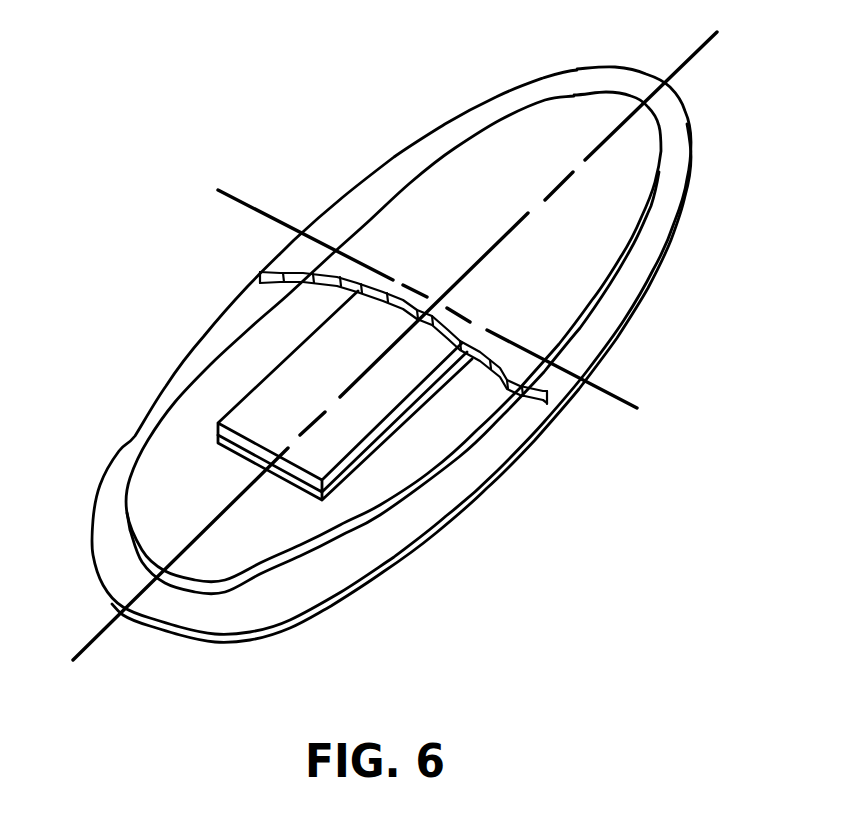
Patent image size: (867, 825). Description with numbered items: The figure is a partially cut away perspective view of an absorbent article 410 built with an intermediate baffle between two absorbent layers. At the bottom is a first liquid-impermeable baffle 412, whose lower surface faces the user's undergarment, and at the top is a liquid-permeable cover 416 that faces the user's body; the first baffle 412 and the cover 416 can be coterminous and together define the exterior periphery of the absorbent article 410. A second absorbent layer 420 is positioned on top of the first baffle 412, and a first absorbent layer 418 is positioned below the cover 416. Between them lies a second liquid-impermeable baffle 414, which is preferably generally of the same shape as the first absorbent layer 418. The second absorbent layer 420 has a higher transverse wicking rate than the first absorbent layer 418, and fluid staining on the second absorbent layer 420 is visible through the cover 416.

The absorbent article 410 is at (399, 344).
The first liquid-impermeable baffle 412 is at (424, 518).
The second liquid-impermeable baffle 414 is at (338, 485).
The liquid-permeable cover 416 is at (633, 192).
The first absorbent layer 418 is at (277, 382).
The second absorbent layer 420 is at (426, 458).